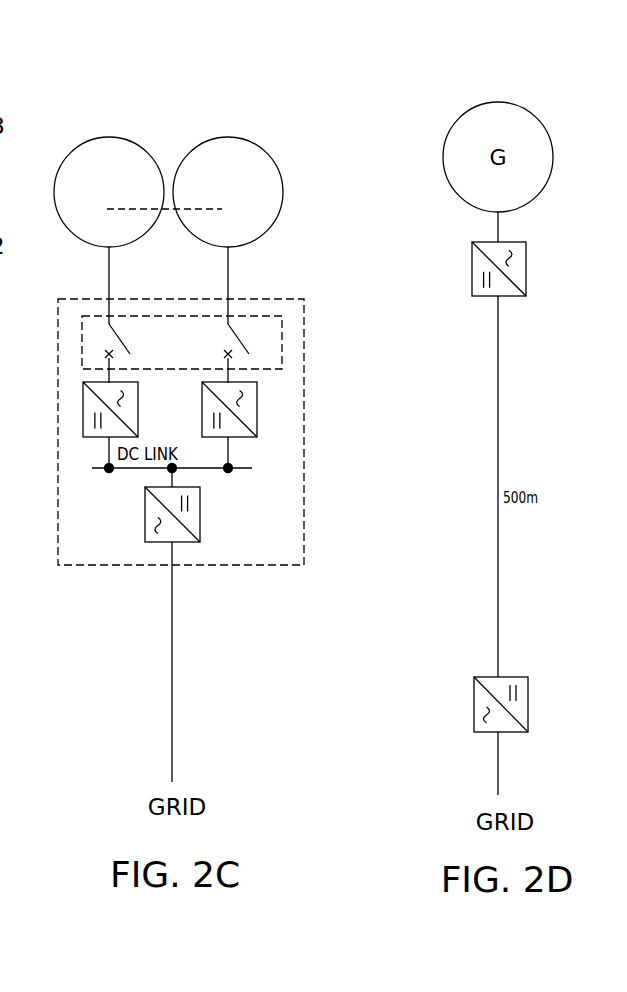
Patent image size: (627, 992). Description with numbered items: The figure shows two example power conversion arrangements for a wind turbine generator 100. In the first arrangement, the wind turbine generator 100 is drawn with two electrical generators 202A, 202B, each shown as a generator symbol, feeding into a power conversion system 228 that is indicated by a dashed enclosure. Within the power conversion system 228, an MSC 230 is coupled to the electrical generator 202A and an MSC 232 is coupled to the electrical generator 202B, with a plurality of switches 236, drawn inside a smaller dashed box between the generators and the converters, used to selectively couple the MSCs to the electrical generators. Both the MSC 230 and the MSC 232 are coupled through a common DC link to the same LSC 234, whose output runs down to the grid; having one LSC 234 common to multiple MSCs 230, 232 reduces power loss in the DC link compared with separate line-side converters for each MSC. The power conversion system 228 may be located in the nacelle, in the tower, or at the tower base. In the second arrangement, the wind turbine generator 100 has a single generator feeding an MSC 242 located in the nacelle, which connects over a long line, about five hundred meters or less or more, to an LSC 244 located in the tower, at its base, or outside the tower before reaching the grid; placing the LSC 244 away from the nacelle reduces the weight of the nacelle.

In FIG. 2C, the wind turbine generator 100 is at (108, 120).
In FIG. 2D, the wind turbine generator 100 is at (465, 100).
In FIG. 2C, the electrical generator 202A is at (115, 138).
In FIG. 2C, the electrical generator 202B is at (259, 150).
In FIG. 2C, the power conversion system 228 is at (305, 352).
In FIG. 2C, the plurality of switches 236 is at (267, 313).
In FIG. 2C, the MSC 230 is at (83, 410).
In FIG. 2C, the MSC 232 is at (256, 408).
In FIG. 2C, the LSC 234 is at (200, 517).
In FIG. 2D, the MSC 242 is at (528, 268).
In FIG. 2D, the LSC 244 is at (528, 706).